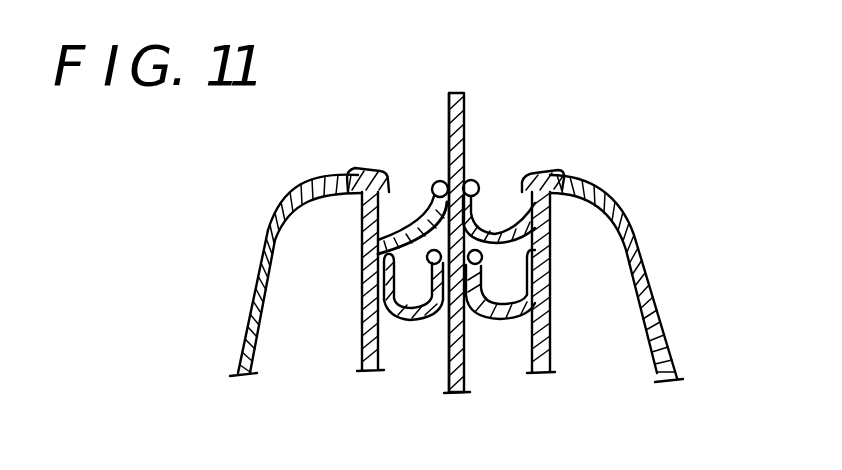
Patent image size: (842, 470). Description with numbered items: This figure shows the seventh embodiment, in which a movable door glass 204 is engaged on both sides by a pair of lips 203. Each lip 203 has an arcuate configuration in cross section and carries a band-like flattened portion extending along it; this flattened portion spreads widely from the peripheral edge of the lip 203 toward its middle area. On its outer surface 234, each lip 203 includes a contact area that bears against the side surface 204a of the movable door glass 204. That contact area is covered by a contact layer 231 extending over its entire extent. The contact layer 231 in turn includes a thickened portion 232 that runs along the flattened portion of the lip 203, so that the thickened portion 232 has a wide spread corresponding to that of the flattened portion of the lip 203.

The lip 203 is at (430, 205).
The movable door glass 204 is at (464, 127).
The side surface 204a is at (451, 127).
The contact layer 231 is at (480, 235).
The thickened portion 232 is at (463, 194).
The outer surface 234 is at (415, 250).